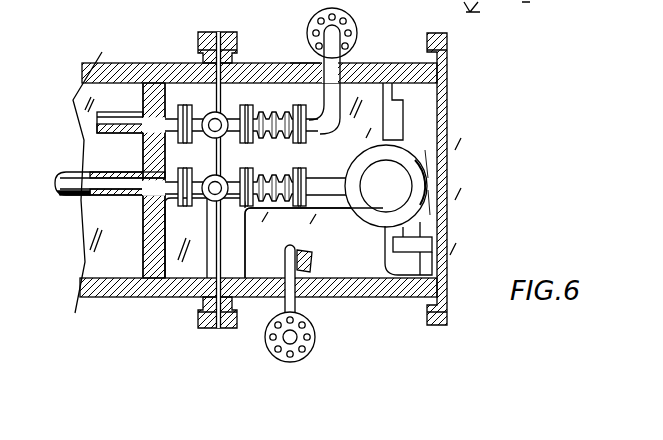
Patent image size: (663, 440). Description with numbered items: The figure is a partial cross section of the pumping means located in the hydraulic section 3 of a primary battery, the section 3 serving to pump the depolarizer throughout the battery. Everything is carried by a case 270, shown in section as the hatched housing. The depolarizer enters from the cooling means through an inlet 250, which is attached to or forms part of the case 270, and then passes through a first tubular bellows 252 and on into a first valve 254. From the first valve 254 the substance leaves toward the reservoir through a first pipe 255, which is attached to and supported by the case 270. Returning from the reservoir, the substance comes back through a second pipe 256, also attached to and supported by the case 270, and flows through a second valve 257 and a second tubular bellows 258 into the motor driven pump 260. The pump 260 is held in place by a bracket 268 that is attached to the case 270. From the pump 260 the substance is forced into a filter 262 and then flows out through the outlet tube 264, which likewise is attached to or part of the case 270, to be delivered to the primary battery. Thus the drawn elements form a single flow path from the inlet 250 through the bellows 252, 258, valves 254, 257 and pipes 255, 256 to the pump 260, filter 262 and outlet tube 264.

The hydraulic section 3 is at (299, 57).
The inlet 250 is at (348, 38).
The first tubular bellows 252 is at (268, 114).
The first valve 254 is at (212, 115).
The first pipe 255 is at (126, 112).
The second pipe 256 is at (100, 175).
The second valve 257 is at (209, 176).
The second tubular bellows 258 is at (273, 176).
The motor driven pump 260 is at (424, 166).
The filter 262 is at (345, 262).
The outlet tube 264 is at (265, 342).
The bracket 268 is at (399, 113).
The case 270 is at (391, 72).